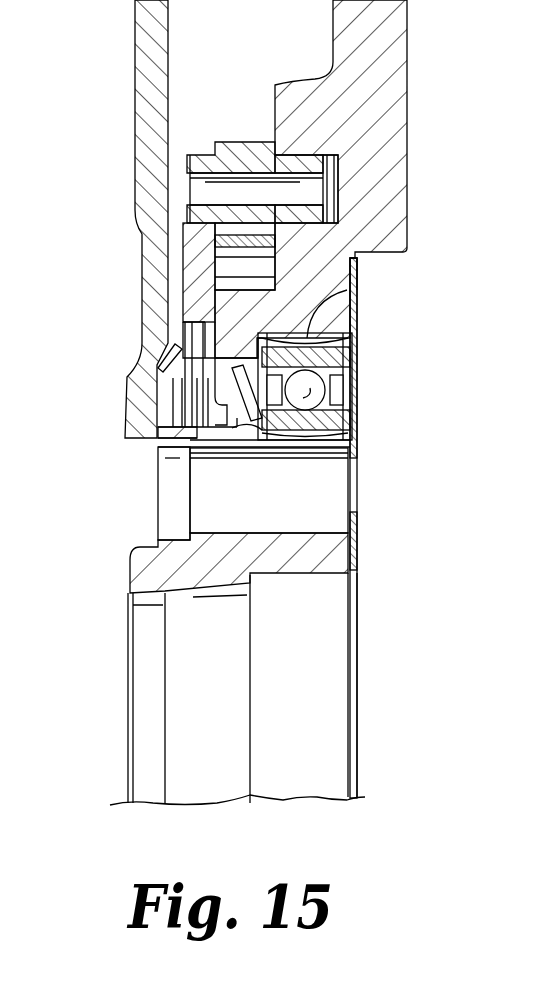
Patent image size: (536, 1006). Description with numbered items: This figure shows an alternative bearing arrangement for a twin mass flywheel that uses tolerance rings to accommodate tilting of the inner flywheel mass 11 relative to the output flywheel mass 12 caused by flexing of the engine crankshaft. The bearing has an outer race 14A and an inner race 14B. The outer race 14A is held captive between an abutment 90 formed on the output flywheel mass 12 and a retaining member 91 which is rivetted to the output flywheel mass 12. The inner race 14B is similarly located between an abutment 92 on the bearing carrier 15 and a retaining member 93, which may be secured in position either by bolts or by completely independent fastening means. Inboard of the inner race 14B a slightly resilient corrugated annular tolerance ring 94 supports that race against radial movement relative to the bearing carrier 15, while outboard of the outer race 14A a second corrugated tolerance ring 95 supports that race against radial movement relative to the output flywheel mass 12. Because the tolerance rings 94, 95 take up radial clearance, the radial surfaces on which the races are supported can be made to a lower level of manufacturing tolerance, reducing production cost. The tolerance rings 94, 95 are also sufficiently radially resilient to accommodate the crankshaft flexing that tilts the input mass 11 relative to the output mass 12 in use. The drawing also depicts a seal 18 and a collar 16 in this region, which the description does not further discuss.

The inner flywheel mass 11 is at (145, 130).
The output flywheel mass 12 is at (360, 202).
The abutment 90 is at (257, 343).
The seal 18 is at (197, 405).
The abutment 92 is at (255, 423).
The outer race 14A is at (353, 357).
The inner race 14B is at (353, 420).
The tolerance ring 94 is at (353, 465).
The collar 16 is at (290, 450).
The retaining member 91 is at (355, 313).
The tolerance ring 95 is at (358, 280).
The retaining member 93 is at (355, 515).
The bearing carrier 15 is at (278, 553).